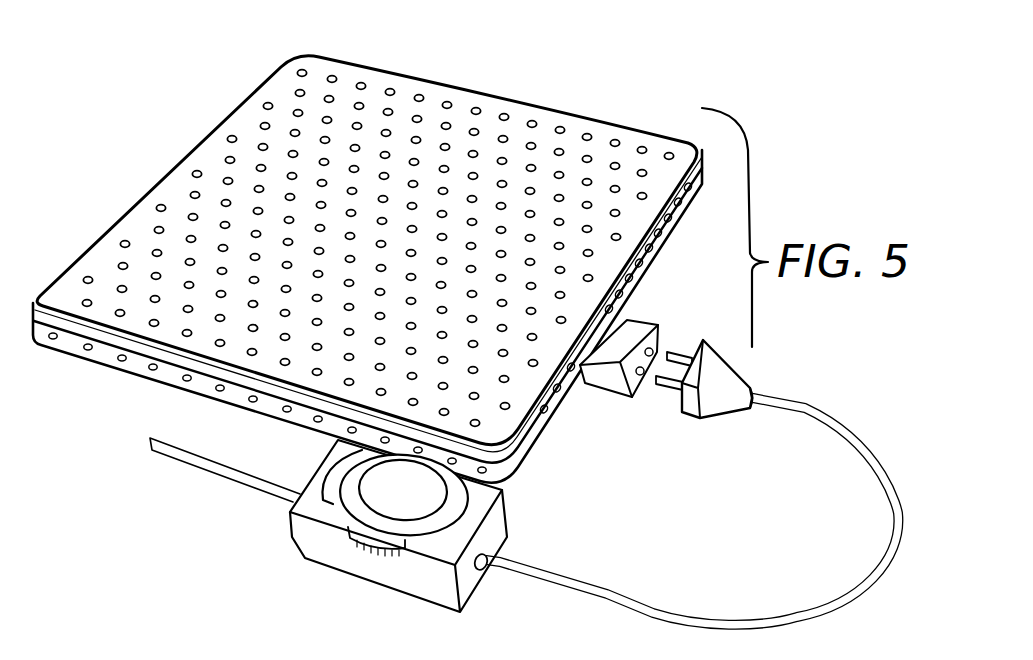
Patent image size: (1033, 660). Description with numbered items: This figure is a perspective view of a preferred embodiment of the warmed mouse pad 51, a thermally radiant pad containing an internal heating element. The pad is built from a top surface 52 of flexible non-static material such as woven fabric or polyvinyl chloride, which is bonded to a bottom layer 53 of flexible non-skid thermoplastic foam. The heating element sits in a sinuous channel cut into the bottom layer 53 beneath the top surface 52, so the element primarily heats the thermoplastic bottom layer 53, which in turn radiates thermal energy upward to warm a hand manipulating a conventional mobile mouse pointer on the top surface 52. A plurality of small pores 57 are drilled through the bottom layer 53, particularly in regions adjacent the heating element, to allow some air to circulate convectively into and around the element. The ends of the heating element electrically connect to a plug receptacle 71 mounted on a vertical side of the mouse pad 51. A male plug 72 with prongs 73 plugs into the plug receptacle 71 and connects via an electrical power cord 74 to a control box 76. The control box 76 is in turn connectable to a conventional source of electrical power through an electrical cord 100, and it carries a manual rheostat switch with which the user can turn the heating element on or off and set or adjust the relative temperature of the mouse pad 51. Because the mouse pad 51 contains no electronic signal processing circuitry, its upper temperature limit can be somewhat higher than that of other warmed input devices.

The warmed mouse pad 51 is at (367, 241).
The top surface 52 is at (213, 153).
The bottom layer 53 is at (138, 363).
The pores 57 is at (415, 96).
The plug receptacle 71 is at (643, 400).
The male plug 72 is at (718, 410).
The prongs 73 is at (678, 350).
The electrical power cord 74 is at (882, 475).
The control box 76 is at (493, 537).
The electrical cord 100 is at (243, 491).